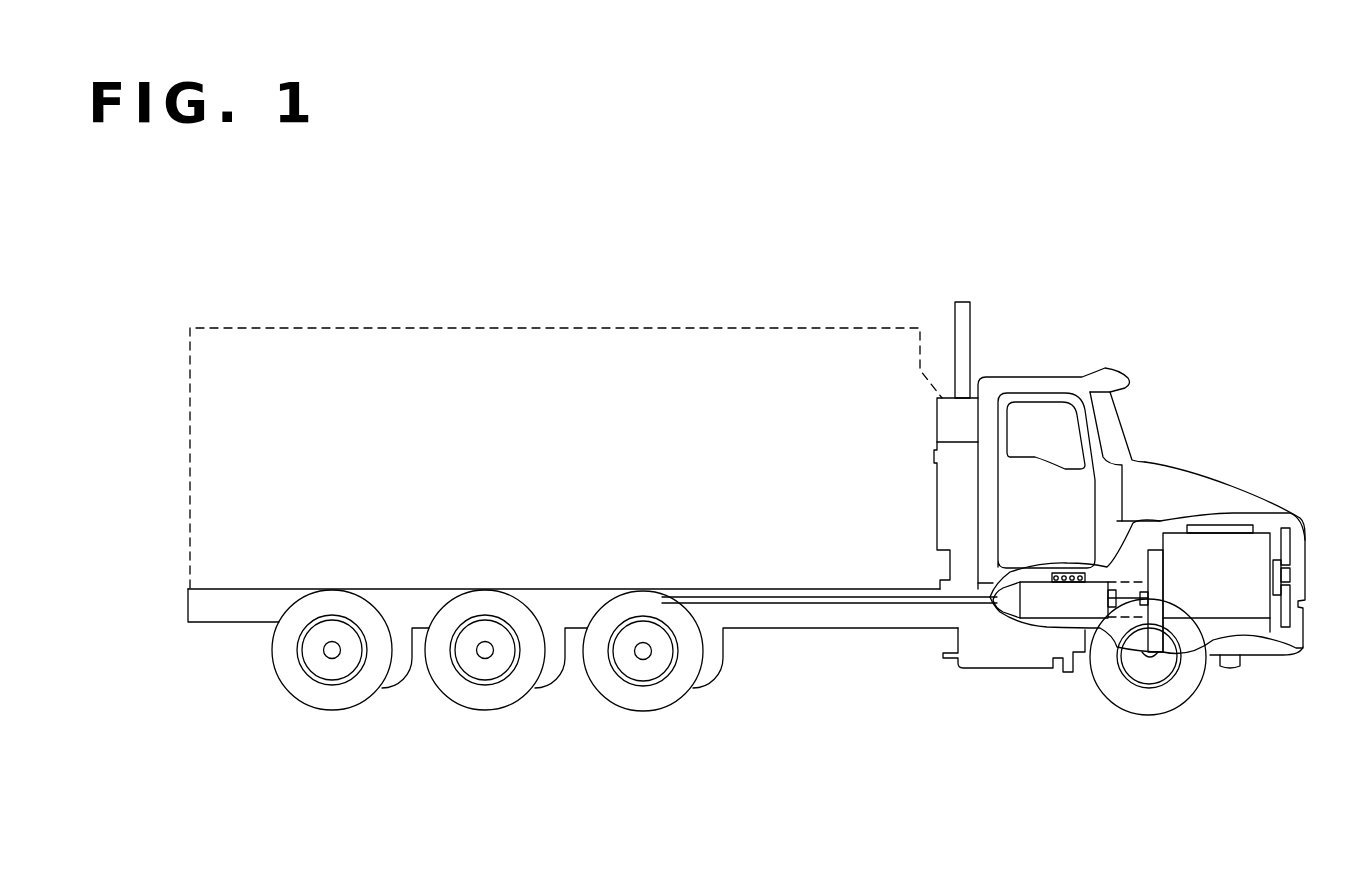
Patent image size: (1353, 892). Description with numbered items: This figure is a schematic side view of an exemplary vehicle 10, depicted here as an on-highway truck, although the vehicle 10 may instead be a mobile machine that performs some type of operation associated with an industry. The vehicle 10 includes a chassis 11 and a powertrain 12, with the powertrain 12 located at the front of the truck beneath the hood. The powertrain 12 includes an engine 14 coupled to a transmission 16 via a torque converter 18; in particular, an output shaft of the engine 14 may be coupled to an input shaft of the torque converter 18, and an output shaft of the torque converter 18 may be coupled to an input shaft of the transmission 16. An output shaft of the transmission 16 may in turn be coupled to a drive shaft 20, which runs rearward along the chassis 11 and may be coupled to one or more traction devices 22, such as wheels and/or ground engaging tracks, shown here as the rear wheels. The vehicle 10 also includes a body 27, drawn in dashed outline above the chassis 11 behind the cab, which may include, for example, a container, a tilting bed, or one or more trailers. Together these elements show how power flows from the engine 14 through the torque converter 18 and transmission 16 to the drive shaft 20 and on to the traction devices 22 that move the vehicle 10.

The vehicle 10 is at (975, 270).
The chassis 11 is at (918, 561).
The powertrain 12 is at (1058, 691).
The engine 14 is at (1237, 560).
The transmission 16 is at (1045, 605).
The torque converter 18 is at (1135, 628).
The drive shaft 20 is at (790, 598).
The traction devices 22 is at (328, 698).
The body 27 is at (585, 350).